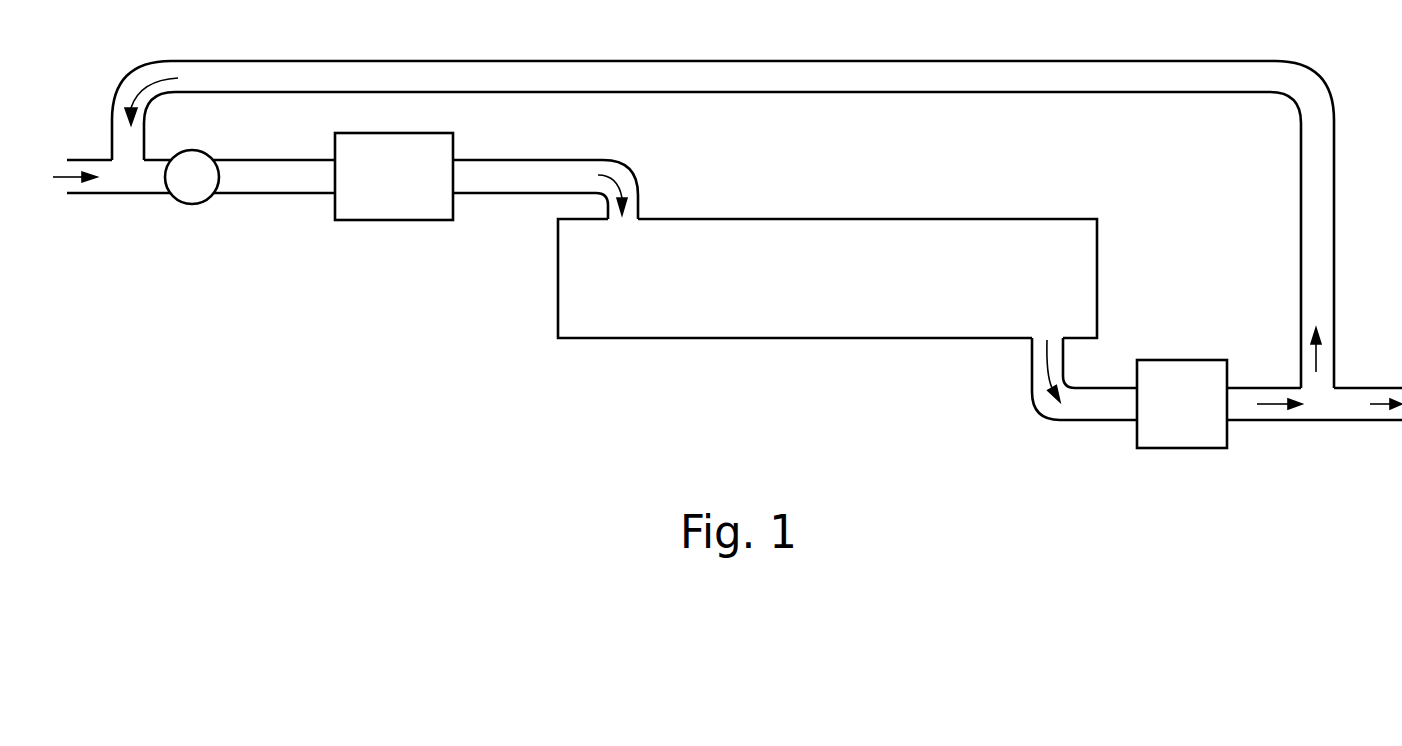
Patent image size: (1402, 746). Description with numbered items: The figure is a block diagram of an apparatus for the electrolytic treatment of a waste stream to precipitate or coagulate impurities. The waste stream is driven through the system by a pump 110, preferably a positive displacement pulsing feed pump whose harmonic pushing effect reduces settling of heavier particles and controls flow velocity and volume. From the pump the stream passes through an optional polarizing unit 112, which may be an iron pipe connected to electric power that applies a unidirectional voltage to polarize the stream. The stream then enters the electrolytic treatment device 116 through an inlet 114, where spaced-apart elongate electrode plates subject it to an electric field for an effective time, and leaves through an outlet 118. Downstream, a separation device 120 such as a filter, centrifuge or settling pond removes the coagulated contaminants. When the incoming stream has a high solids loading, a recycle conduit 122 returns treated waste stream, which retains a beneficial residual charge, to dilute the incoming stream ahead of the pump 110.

The pump 110 is at (192, 150).
The polarizing unit 112 is at (420, 189).
The inlet 114 is at (640, 217).
The electrolytic treatment device 116 is at (818, 298).
The outlet 118 is at (1030, 340).
The separation device 120 is at (1205, 418).
The recycle conduit 122 is at (1067, 62).